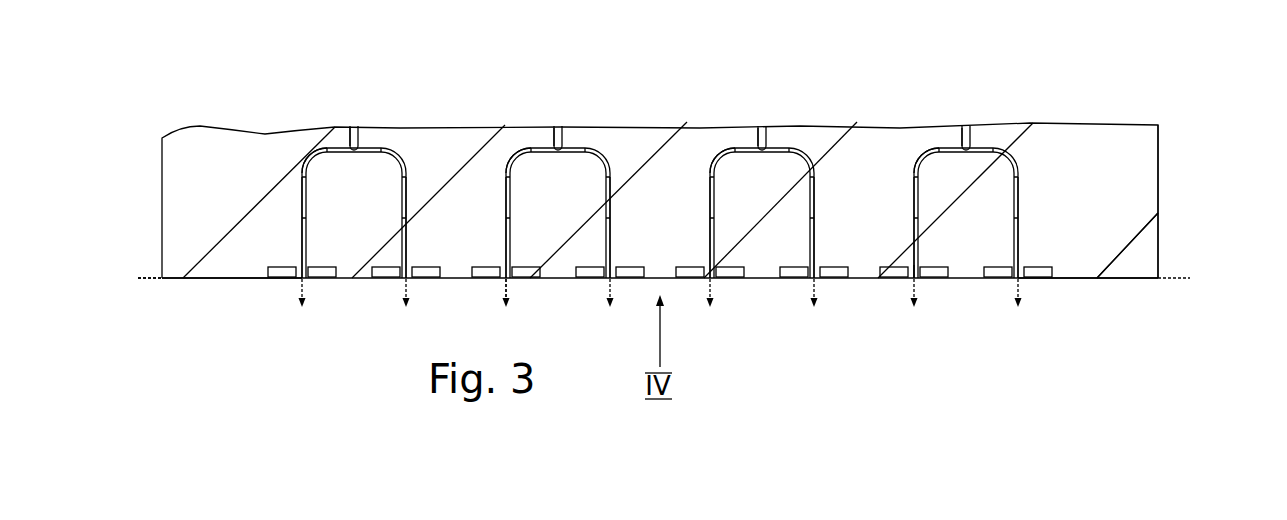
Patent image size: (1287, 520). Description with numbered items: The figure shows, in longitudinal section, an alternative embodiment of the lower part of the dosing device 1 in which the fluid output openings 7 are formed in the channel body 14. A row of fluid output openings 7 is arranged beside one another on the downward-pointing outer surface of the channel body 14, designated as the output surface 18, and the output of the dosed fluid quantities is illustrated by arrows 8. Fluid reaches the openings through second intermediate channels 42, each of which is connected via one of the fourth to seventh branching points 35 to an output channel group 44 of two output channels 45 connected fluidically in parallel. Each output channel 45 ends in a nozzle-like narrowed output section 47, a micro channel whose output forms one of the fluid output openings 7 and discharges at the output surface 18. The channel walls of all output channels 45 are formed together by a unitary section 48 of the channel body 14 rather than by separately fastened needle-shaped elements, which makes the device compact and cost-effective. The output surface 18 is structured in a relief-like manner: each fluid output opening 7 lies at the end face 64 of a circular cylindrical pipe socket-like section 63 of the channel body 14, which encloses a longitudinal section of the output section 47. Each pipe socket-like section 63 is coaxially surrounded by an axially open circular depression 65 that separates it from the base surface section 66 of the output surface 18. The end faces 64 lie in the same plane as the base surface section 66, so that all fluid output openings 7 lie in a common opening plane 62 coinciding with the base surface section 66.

The dosing device 1 is at (1108, 104).
The channel body 14 is at (1158, 180).
The output surface 18 is at (212, 288).
The fluid output openings 7 is at (304, 280).
The branching points 35 is at (357, 145).
The second intermediate channels 42 is at (351, 124).
The output channel group 44 is at (290, 186).
The output channels 45 is at (306, 201).
The output section 47 is at (306, 242).
The unitary section 48 is at (1141, 270).
The opening plane 62 is at (150, 283).
The pipe socket-like section 63 is at (300, 272).
The end face 64 is at (907, 286).
The circular depression 65 is at (284, 268).
The base surface section 66 is at (1026, 287).
The arrows 8 is at (502, 289).